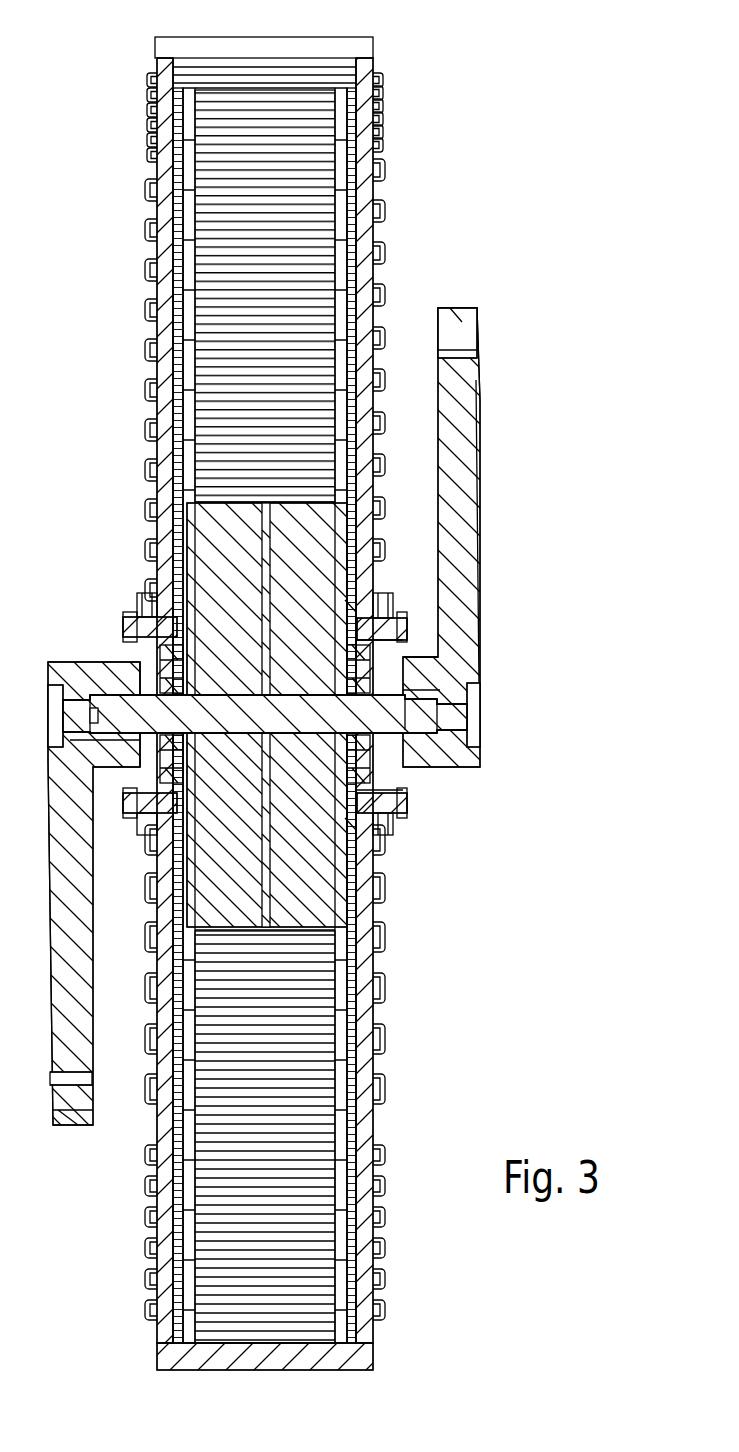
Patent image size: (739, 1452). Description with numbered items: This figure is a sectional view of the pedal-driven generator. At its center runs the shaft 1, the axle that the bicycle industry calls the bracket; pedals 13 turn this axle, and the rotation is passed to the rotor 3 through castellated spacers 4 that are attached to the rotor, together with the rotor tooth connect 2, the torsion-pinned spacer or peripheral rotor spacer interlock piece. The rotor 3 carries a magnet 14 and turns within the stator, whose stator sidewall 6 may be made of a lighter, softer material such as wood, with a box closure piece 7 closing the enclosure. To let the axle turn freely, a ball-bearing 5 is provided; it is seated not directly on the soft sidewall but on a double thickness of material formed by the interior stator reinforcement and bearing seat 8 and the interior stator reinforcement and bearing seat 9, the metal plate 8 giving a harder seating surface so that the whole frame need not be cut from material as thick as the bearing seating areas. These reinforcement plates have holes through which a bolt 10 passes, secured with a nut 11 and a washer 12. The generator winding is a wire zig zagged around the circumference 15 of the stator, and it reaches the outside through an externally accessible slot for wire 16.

The shaft 1 is at (404, 713).
The rotor tooth connect 2 is at (235, 535).
The rotor 3 is at (358, 188).
The spacer 4 is at (187, 688).
The ball-bearing 5 is at (372, 753).
The stator sidewall 6 is at (358, 257).
The box closure piece 7 is at (332, 48).
The interior stator reinforcement and bearing seat 8 is at (148, 598).
The interior stator reinforcement and bearing seat 9 is at (137, 600).
The bolt 10 is at (393, 836).
The nut 11 is at (407, 818).
The washer 12 is at (397, 612).
The pedal 13 is at (462, 500).
The magnet 14 is at (260, 278).
The wire zig zagged around the circumference 15 is at (145, 348).
The externally accessible slot for wire 16 is at (262, 587).